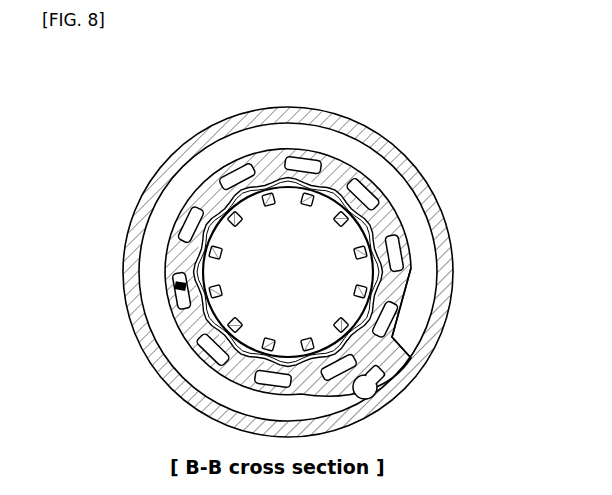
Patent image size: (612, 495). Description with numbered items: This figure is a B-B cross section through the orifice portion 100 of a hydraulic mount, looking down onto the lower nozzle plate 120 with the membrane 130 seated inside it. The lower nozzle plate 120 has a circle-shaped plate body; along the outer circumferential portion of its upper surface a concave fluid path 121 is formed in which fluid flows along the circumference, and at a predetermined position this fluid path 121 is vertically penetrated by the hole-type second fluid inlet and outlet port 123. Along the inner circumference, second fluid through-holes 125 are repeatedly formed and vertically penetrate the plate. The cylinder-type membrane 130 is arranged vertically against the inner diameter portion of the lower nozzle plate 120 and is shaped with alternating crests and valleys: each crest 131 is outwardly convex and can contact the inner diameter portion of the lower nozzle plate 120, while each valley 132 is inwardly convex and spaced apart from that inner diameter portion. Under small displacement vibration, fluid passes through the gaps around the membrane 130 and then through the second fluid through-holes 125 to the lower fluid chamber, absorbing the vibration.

The orifice portion 100 is at (382, 110).
The lower nozzle plate 120 is at (462, 248).
The second fluid through-hole 125 is at (381, 187).
The fluid path 121 is at (416, 320).
The second fluid inlet and outlet port 123 is at (366, 388).
The membrane 130 is at (176, 284).
The crest 131 is at (203, 350).
The valley 132 is at (178, 286).